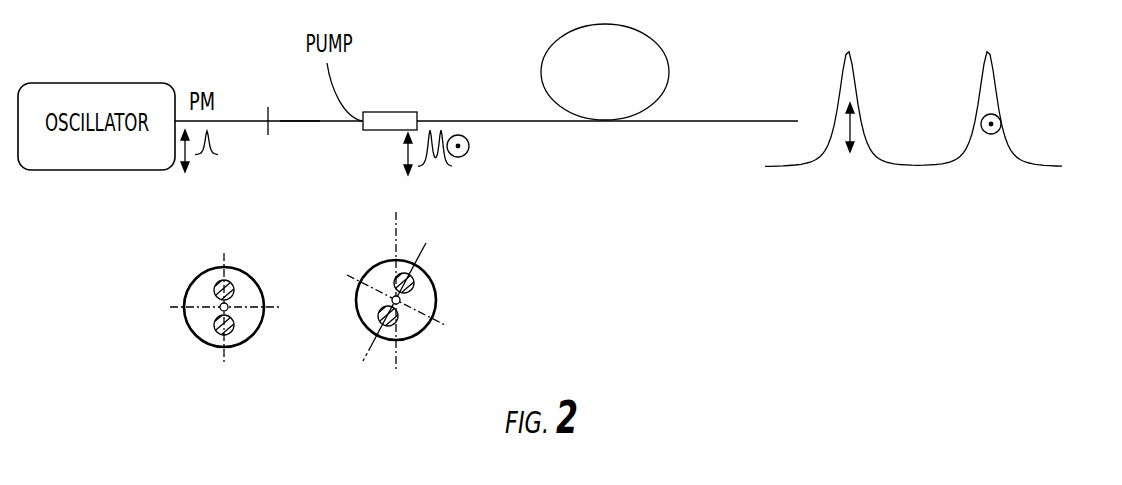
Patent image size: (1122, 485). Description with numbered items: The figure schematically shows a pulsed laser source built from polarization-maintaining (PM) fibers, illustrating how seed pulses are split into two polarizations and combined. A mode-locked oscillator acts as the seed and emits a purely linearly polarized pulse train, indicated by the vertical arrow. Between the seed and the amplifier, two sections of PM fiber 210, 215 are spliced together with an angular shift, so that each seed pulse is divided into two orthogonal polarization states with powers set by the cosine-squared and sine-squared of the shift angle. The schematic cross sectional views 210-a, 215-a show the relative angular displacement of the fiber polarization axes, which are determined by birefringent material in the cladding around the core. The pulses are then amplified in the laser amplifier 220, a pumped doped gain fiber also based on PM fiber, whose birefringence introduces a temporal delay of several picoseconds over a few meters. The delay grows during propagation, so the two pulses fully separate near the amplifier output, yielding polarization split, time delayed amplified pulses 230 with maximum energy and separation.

The section of PM fiber 210 is at (249, 120).
The section of PM fiber 215 is at (300, 120).
The laser amplifier 220 is at (672, 45).
The polarization split, time delayed amplified pulses 230 is at (1008, 59).
The schematic cross sectional view 210-a is at (195, 276).
The schematic cross sectional view 215-a is at (372, 269).